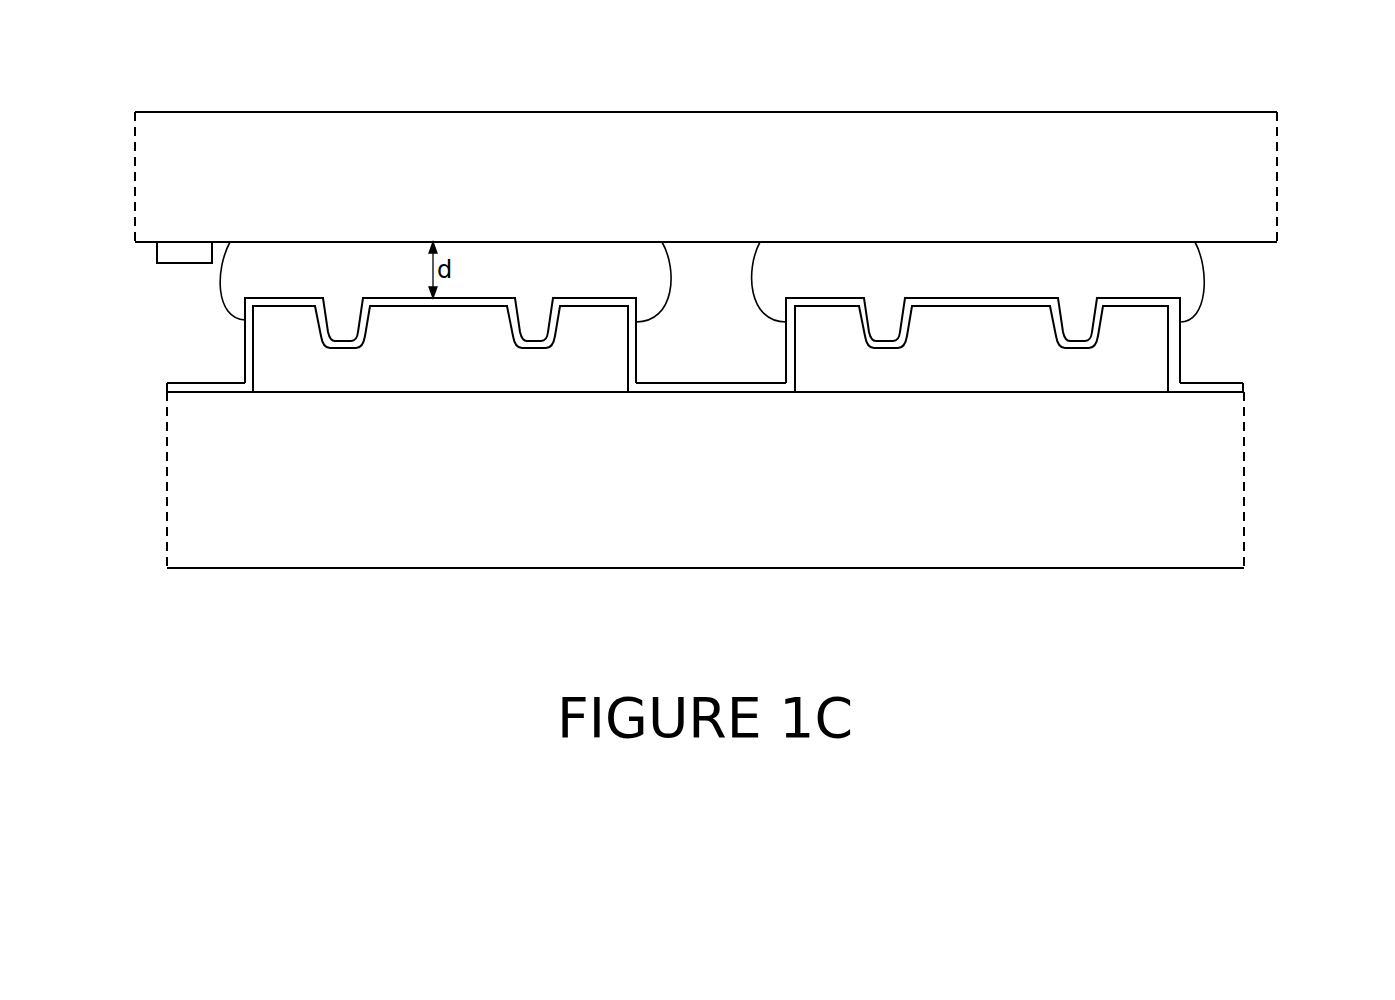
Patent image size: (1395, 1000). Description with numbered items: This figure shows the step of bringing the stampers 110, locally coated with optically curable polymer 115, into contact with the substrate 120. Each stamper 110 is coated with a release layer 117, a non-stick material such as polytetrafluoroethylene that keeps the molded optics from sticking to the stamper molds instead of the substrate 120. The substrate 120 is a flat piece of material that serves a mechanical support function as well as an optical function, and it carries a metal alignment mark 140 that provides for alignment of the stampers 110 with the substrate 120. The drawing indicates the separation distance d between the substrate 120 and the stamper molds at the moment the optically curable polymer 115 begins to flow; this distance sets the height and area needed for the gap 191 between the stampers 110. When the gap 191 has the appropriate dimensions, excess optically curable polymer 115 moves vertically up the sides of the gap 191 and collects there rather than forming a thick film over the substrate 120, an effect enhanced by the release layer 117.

The stamper 110 is at (211, 343).
The optically curable polymer 115 is at (1207, 273).
The release layer 117 is at (1240, 390).
The substrate 120 is at (315, 128).
The metal alignment mark 140 is at (183, 257).
The gap 191 is at (720, 281).